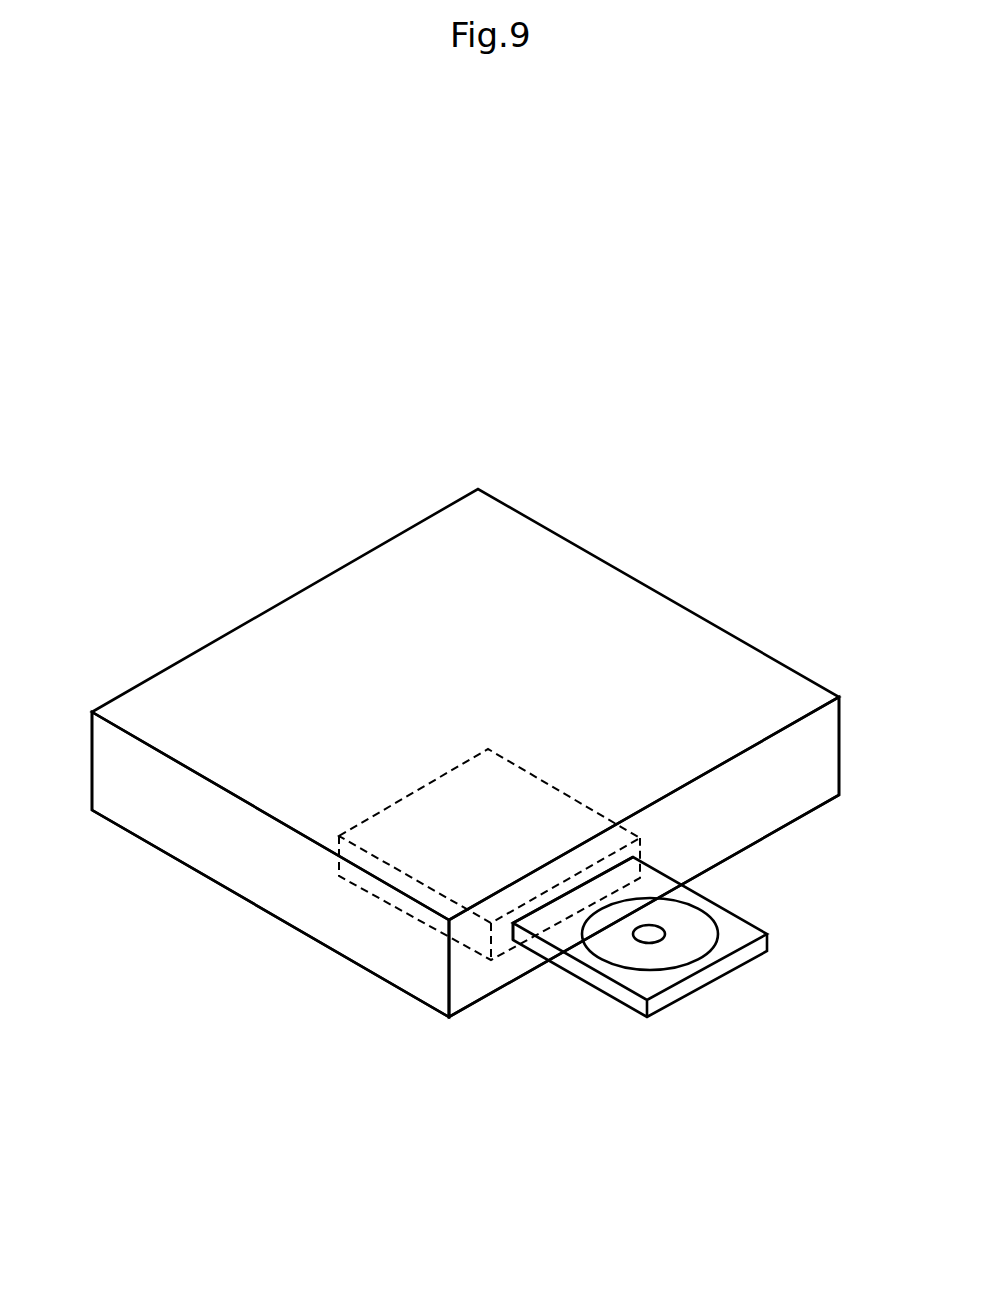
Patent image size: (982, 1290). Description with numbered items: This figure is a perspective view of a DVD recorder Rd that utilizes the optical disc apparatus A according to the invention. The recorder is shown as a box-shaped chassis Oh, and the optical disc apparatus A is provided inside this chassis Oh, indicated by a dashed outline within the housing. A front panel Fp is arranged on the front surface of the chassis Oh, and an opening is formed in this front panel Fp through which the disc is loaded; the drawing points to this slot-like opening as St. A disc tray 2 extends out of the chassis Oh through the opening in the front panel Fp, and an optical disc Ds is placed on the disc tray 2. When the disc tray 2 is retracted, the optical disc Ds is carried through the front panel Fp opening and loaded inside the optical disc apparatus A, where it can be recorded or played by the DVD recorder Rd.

The DVD recorder Rd is at (224, 572).
The chassis Oh is at (247, 865).
The front panel Fp is at (725, 822).
The optical disc apparatus A is at (426, 819).
The slot St is at (517, 942).
The disc tray 2 is at (630, 1000).
The optical disc Ds is at (671, 960).